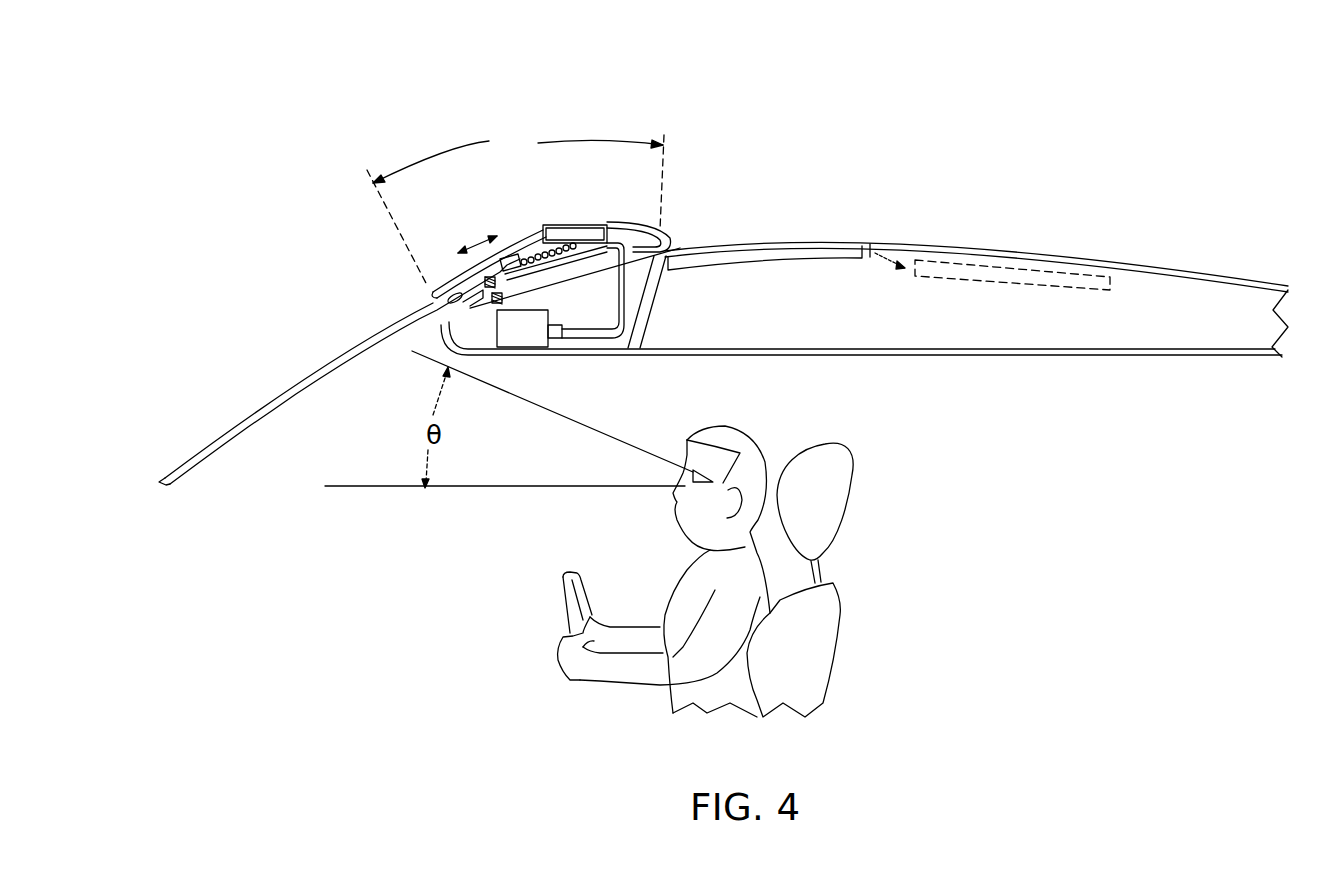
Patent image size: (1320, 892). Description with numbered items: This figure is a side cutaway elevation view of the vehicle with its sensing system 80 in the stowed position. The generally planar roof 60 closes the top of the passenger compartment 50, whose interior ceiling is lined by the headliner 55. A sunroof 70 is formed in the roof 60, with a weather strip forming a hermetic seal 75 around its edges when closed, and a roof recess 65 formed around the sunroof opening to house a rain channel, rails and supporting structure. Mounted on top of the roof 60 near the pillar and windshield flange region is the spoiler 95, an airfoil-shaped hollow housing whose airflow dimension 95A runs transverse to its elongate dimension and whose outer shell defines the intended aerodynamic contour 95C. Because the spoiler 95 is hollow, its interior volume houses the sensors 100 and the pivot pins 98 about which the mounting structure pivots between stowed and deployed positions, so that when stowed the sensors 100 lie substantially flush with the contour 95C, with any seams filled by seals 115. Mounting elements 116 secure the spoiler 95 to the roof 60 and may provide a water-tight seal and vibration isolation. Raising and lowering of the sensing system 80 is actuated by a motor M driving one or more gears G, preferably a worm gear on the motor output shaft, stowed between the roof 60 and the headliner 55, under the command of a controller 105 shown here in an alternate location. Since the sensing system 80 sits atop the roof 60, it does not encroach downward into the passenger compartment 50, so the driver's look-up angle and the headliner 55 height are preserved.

The passenger compartment 50 is at (361, 450).
The headliner 55 is at (1038, 357).
The roof 60 is at (1127, 277).
The roof recess 65 is at (806, 318).
The sunroof 70 is at (758, 250).
The hermetic seal 75 is at (661, 253).
The sensing system 80 is at (517, 225).
The spoiler 95 is at (440, 282).
The airflow dimension 95A is at (515, 205).
The aerodynamic contour 95C is at (485, 238).
The pivot pins 98 is at (543, 236).
The sensors 100 is at (583, 205).
The controller 105 is at (525, 345).
The seals 115 is at (608, 219).
The mounting elements 116 is at (432, 298).
The motor M is at (517, 264).
The gears G is at (542, 263).